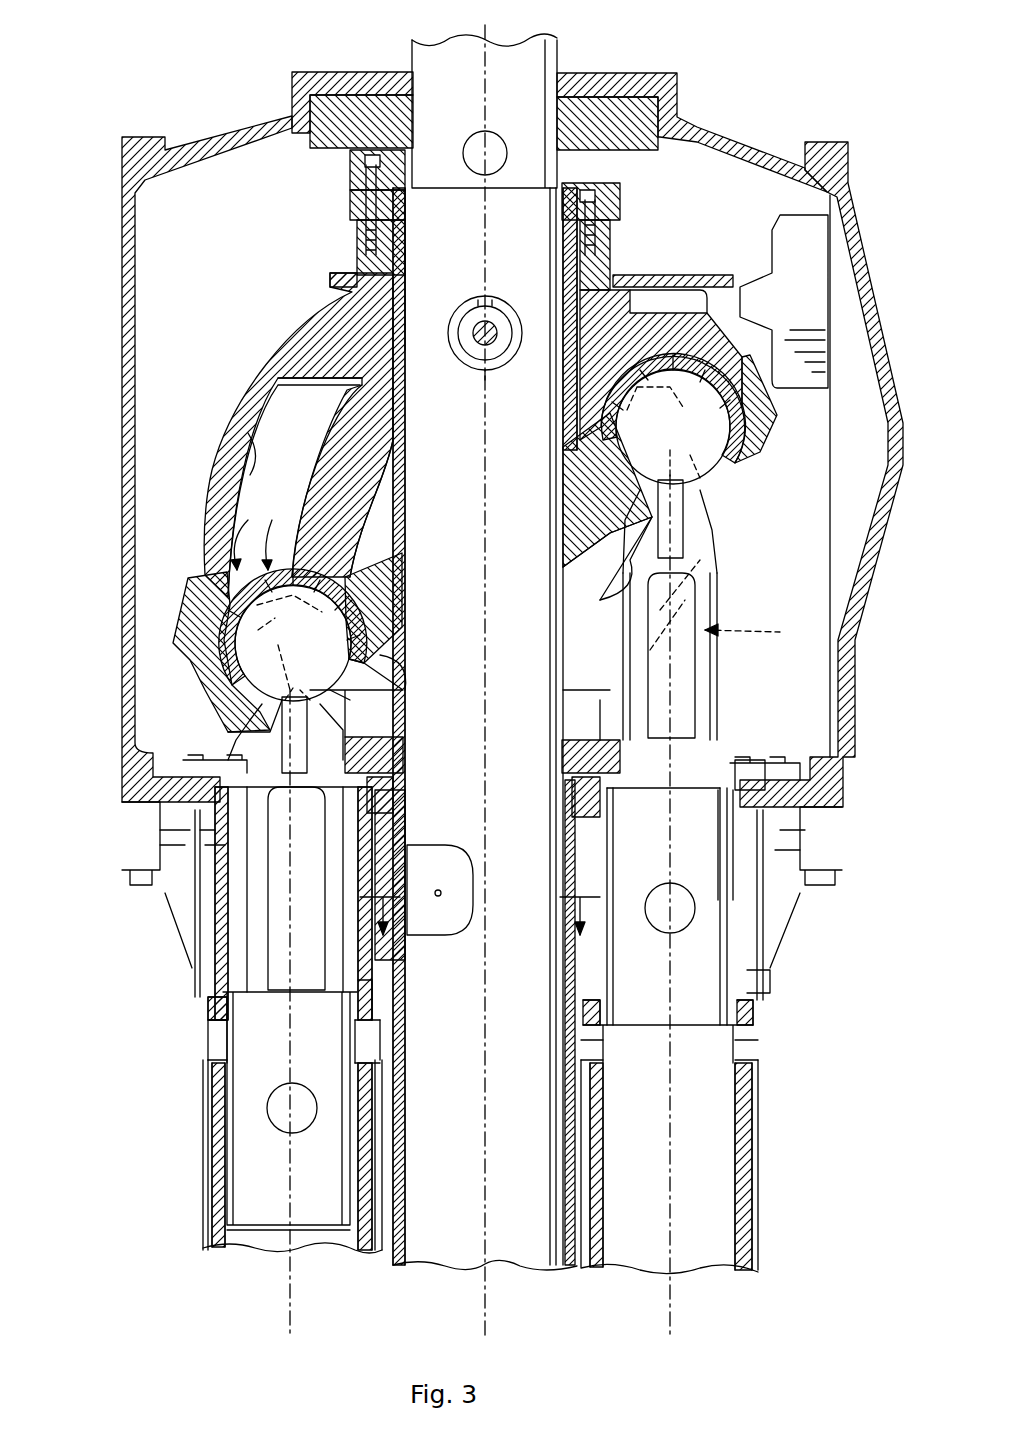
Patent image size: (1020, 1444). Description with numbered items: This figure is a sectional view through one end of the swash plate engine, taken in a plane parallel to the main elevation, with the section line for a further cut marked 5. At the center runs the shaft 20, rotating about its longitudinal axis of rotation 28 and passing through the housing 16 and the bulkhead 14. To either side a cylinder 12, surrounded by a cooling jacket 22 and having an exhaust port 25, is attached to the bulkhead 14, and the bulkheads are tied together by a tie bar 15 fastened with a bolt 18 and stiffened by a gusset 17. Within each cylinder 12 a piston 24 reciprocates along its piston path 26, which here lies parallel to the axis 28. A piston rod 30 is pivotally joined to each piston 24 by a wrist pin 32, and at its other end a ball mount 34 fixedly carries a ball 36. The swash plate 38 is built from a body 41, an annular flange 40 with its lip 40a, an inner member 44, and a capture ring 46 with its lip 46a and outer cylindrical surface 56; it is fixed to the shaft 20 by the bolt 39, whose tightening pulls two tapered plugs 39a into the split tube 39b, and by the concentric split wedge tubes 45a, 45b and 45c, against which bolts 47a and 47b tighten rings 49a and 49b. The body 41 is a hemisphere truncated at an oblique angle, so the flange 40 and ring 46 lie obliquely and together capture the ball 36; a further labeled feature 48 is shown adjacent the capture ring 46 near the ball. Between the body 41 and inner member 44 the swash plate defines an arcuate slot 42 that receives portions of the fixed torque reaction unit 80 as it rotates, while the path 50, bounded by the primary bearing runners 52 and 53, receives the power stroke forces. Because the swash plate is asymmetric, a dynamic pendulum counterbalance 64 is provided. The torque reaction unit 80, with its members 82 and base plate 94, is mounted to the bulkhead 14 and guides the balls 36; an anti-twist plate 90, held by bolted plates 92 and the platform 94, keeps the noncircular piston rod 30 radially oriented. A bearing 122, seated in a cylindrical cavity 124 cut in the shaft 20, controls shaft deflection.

The cylinder 12 is at (750, 993).
The bulkhead 14 is at (402, 793).
The tie bar 15 is at (195, 968).
The housing 16 is at (122, 520).
The gusset 17 is at (165, 893).
The bolt 18 is at (140, 876).
The shaft 20 is at (558, 62).
The jacket 22 is at (760, 1223).
The piston 24 is at (255, 1153).
The exhaust port 25 is at (215, 1042).
The piston path 26 is at (290, 1313).
The axis of rotation 28 is at (485, 1313).
The piston rod 30 is at (245, 927).
The wrist pin 32 is at (270, 1103).
The ball mount 34 is at (685, 553).
The ball 36 is at (318, 682).
The swash plate 38 is at (248, 370).
The bolt 39 is at (500, 316).
The tapered plug 39a is at (500, 360).
The split tube 39b is at (458, 360).
The annular flange 40 is at (208, 708).
The lip 40a is at (258, 740).
The body 41 is at (300, 328).
The arcuate slot 42 is at (235, 413).
The inner member 44 is at (393, 520).
The wedge tube 45a is at (405, 228).
The wedge tube 45b is at (406, 275).
The wedge tube 45c is at (406, 312).
The capture ring 46 is at (572, 533).
The lip 46a is at (640, 548).
The bolt 47a is at (352, 160).
The bolt 47b is at (618, 210).
The wedge lower face 48 is at (572, 588).
The ring 49a is at (352, 195).
The ring 49b is at (360, 218).
The path 50 is at (258, 526).
The primary bearing runner 52 is at (233, 658).
The primary bearing runner 53 is at (293, 627).
The outer cylindrical surface 56 is at (388, 622).
The dynamic pendulum counterbalance 64 is at (790, 258).
The torque reaction unit 80 is at (708, 752).
The member 82 is at (262, 395).
The anti-twist plate 90 is at (730, 807).
The bolted plate 92 is at (748, 765).
The base plate 94 is at (605, 722).
The bearing 122 is at (437, 936).
The cylindrical cavity 124 is at (455, 845).
The section line 5 is at (480, 900).